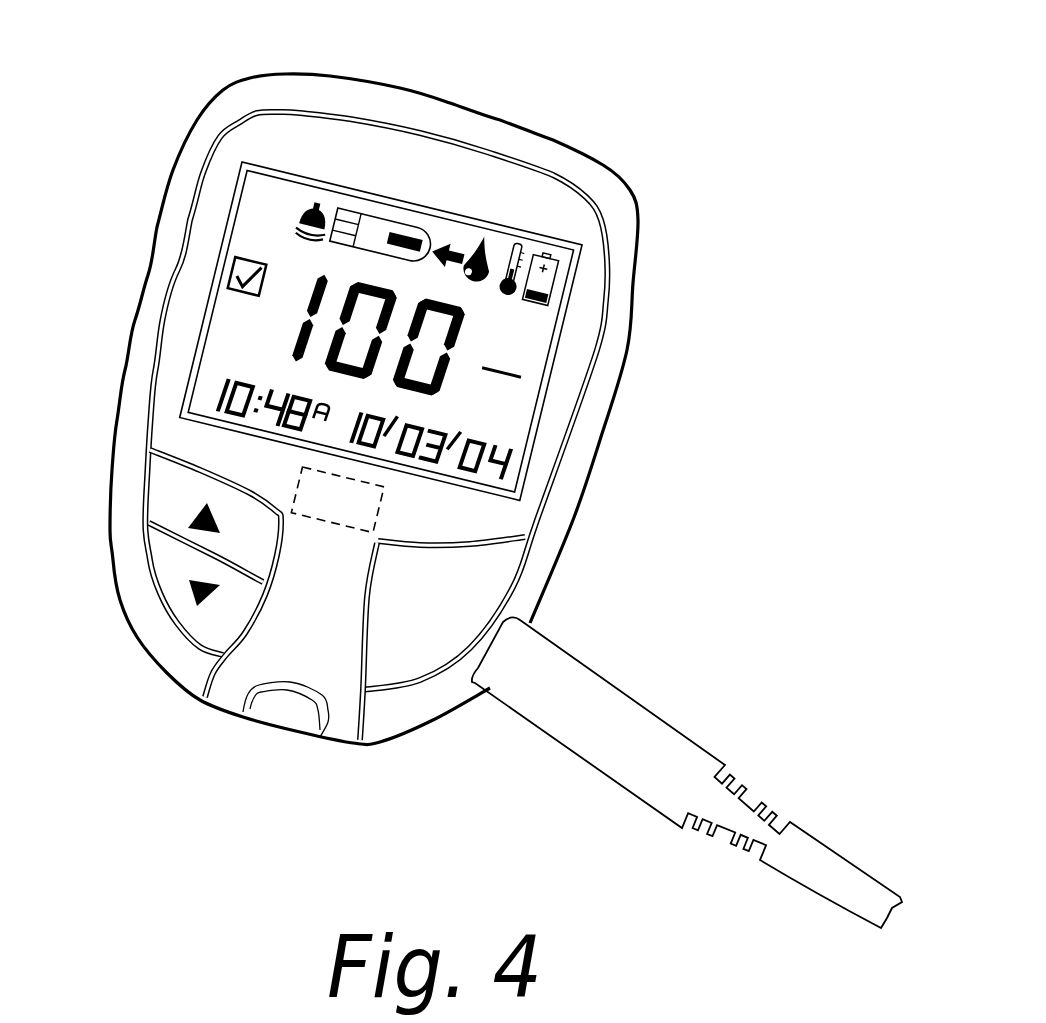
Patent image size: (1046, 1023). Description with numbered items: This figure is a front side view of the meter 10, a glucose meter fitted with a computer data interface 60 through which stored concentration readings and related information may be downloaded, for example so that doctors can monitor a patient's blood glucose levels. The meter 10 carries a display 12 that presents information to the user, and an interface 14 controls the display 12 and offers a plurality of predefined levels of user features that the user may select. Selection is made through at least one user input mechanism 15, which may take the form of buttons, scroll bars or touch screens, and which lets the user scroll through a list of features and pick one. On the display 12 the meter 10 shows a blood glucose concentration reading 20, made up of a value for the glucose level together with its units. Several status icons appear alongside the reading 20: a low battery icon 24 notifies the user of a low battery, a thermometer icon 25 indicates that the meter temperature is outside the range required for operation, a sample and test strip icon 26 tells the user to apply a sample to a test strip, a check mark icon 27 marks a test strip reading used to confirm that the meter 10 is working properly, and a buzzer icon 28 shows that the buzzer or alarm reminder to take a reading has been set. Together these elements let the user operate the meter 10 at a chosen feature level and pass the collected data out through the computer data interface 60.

The meter 10 is at (638, 222).
The display 12 is at (540, 403).
The interface 14 is at (367, 510).
The user input mechanism 15 is at (193, 598).
The blood glucose concentration reading 20 is at (297, 328).
The low battery icon 24 is at (547, 255).
The thermometer icon 25 is at (519, 244).
The sample and test strip icon 26 is at (407, 180).
The check mark icon 27 is at (245, 265).
The buzzer icon 28 is at (316, 205).
The computer data interface 60 is at (680, 728).